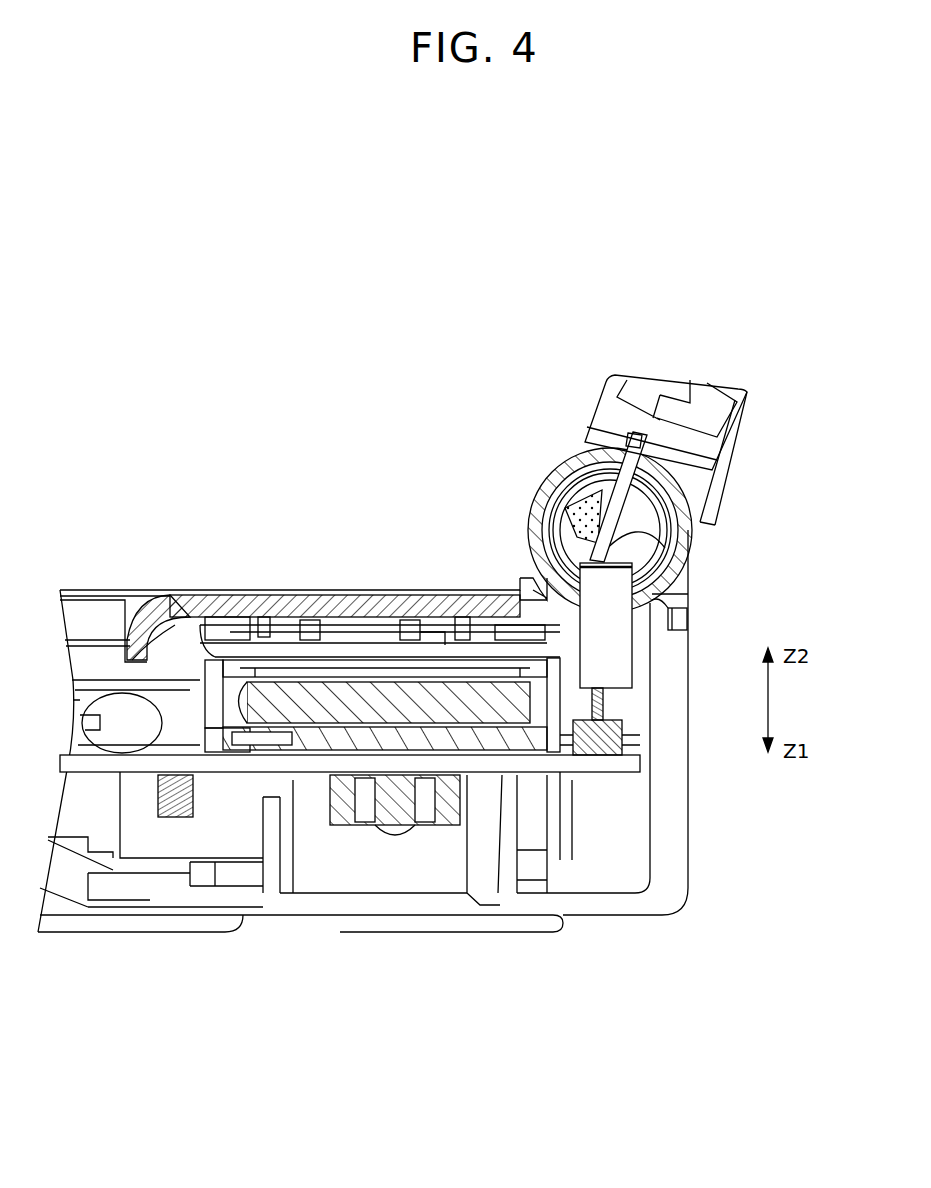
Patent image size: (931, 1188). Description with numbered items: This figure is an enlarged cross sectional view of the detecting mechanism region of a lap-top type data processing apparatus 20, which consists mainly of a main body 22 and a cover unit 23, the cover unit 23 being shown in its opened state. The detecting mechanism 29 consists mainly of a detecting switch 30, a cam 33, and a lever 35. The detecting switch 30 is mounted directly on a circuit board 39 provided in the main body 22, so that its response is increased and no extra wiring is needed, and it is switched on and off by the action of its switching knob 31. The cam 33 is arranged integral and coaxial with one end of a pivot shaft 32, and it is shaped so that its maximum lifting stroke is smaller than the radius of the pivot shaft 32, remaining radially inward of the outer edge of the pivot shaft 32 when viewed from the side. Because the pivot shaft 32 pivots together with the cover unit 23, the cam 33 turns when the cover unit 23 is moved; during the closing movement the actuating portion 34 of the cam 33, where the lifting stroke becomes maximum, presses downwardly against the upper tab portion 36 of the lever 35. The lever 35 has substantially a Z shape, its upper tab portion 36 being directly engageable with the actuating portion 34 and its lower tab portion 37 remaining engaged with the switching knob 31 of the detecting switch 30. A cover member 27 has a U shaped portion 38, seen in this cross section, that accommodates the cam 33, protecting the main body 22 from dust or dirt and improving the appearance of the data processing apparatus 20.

The data processing apparatus 20 is at (117, 269).
The main body 22 is at (275, 925).
The cover unit 23 is at (598, 395).
The cover member 27 is at (260, 607).
The detecting mechanism 29 is at (573, 450).
The detecting switch 30 is at (640, 757).
The switching knob 31 is at (605, 707).
The pivot shaft 32 is at (633, 523).
The cam 33 is at (583, 513).
The actuating portion 34 is at (540, 478).
The lever 35 is at (557, 583).
The upper tab portion 36 is at (685, 615).
The lower tab portion 37 is at (602, 657).
The U shaped portion 38 is at (540, 500).
The circuit board 39 is at (577, 772).